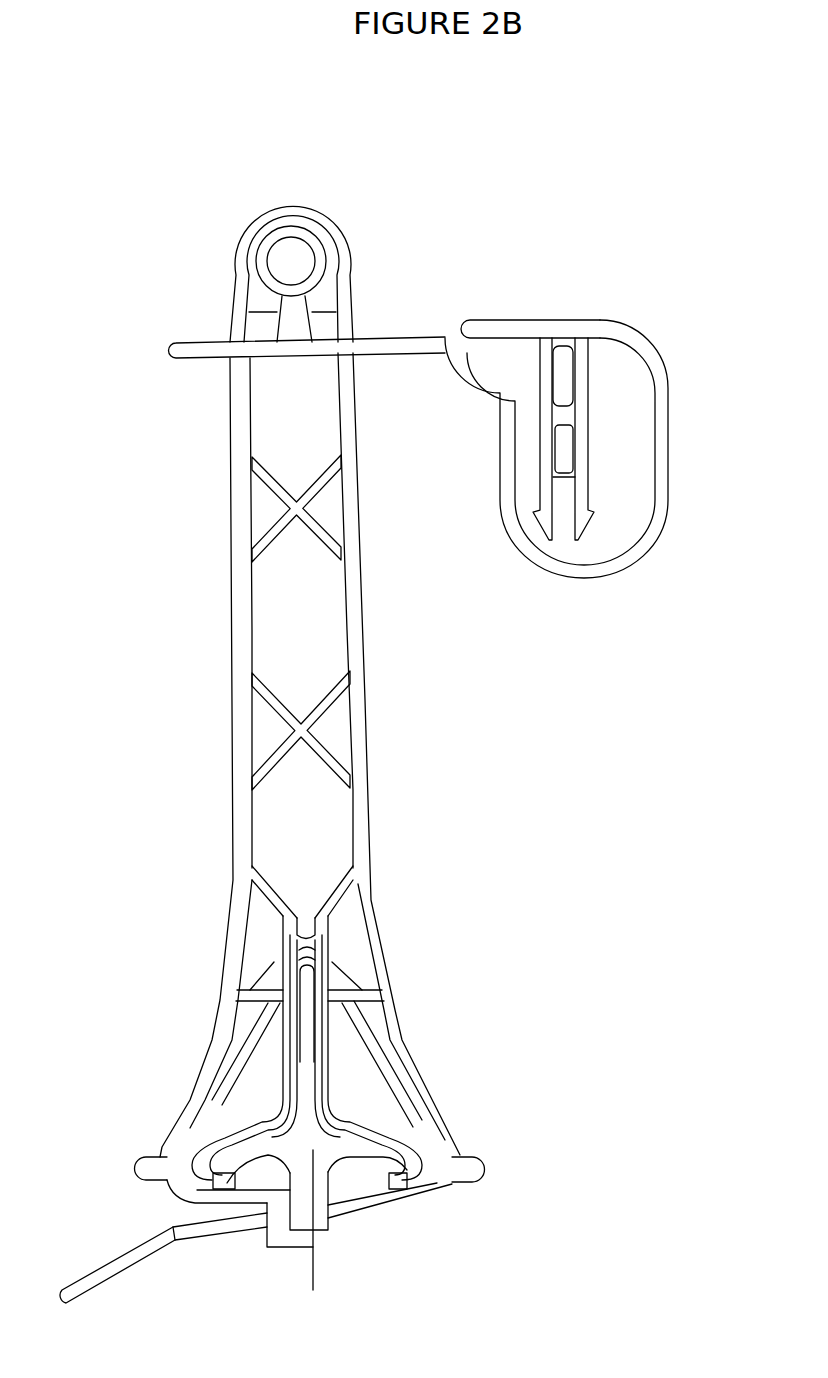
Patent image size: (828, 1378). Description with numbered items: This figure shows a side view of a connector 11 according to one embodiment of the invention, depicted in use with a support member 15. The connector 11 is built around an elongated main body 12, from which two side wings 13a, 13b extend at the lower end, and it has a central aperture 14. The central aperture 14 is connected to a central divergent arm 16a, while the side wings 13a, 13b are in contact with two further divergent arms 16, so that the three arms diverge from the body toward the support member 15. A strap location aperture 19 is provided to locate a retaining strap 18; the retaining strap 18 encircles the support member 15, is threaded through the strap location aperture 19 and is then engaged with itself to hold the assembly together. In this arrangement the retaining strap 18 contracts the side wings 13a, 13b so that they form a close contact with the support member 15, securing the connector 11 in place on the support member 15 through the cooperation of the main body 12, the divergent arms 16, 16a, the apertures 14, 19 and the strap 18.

The connector 11 is at (660, 712).
The main body 12 is at (365, 850).
The side wing 13a is at (432, 1163).
The side wing 13b is at (155, 1168).
The central aperture 14 is at (300, 930).
The support member 15 is at (298, 1230).
The further divergent arms 16 is at (215, 1172).
The central divergent arm 16a is at (310, 998).
The retaining strap 18 is at (118, 1270).
The strap location aperture 19 is at (208, 1065).